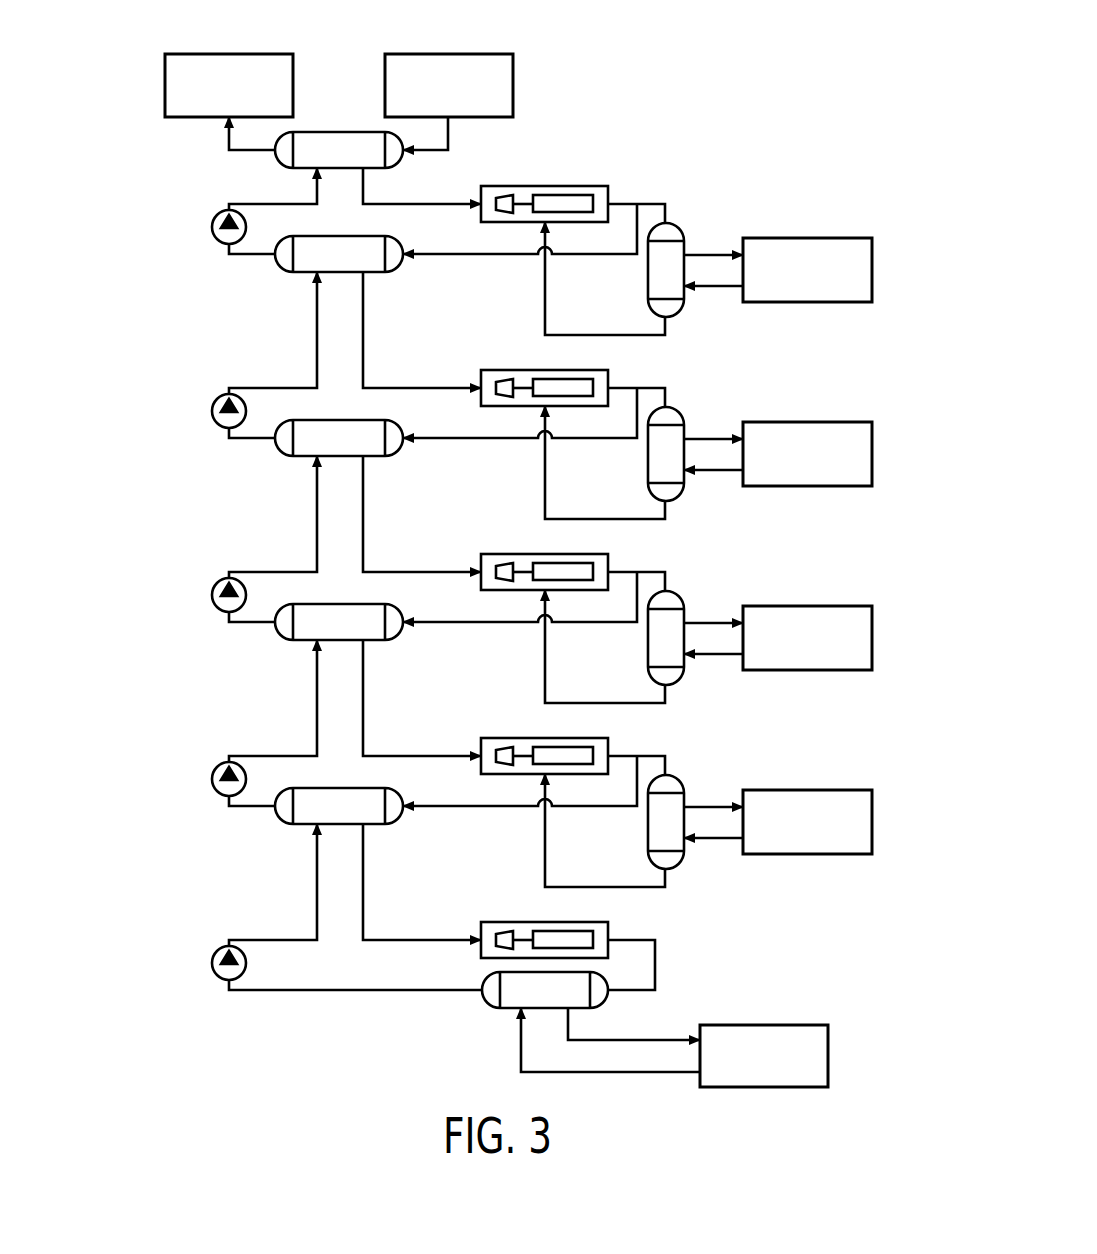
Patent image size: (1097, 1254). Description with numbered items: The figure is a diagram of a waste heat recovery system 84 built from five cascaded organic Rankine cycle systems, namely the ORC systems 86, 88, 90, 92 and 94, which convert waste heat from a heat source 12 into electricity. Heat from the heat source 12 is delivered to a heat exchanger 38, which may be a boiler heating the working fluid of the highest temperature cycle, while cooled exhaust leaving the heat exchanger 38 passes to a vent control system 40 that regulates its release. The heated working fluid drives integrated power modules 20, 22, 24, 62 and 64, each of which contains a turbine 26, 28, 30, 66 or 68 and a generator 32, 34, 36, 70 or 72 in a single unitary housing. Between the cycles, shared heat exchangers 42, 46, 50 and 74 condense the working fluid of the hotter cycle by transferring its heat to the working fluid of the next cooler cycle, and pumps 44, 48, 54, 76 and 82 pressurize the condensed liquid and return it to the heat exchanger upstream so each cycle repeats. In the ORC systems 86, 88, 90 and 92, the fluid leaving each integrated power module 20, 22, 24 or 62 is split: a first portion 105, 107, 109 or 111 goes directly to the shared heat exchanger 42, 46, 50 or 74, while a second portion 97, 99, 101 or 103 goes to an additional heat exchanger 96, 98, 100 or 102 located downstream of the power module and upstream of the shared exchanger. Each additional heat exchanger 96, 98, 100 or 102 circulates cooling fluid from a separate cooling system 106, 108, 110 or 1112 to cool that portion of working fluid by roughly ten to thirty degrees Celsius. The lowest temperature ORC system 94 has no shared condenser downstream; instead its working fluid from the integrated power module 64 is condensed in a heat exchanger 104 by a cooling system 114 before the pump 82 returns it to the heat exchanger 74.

The waste heat recovery system 84 is at (626, 46).
The heat source 12 is at (513, 86).
The vent control system 40 is at (165, 88).
The heat exchanger 38 is at (338, 132).
The heat exchanger 42 is at (338, 236).
The heat exchanger 46 is at (338, 420).
The heat exchanger 50 is at (338, 604).
The heat exchanger 74 is at (338, 788).
The pump 44 is at (217, 215).
The pump 48 is at (217, 399).
The pump 54 is at (217, 583).
The pump 76 is at (217, 767).
The pump 82 is at (217, 951).
The integrated power module 20 is at (569, 182).
The integrated power module 22 is at (569, 366).
The integrated power module 24 is at (569, 550).
The integrated power module 62 is at (569, 734).
The integrated power module 64 is at (569, 918).
The turbine 26 is at (505, 196).
The turbine 28 is at (505, 380).
The turbine 30 is at (505, 564).
The turbine 66 is at (505, 748).
The turbine 68 is at (505, 932).
The generator 32 is at (563, 195).
The generator 34 is at (563, 379).
The generator 36 is at (563, 563).
The generator 70 is at (563, 747).
The generator 72 is at (563, 931).
The ORC system 86 is at (637, 235).
The ORC system 88 is at (637, 418).
The ORC system 90 is at (637, 604).
The ORC system 92 is at (637, 790).
The ORC system 94 is at (668, 966).
The additional heat exchanger 96 is at (682, 227).
The additional heat exchanger 98 is at (682, 411).
The additional heat exchanger 100 is at (682, 595).
The additional heat exchanger 102 is at (682, 779).
The heat exchanger 104 is at (542, 1008).
The second portion 97 is at (676, 207).
The second portion 99 is at (676, 391).
The second portion 101 is at (676, 575).
The second portion 103 is at (676, 759).
The first portion 105 is at (614, 264).
The first portion 107 is at (614, 448).
The first portion 109 is at (614, 632).
The first portion 111 is at (614, 816).
The cooling system 106 is at (812, 238).
The cooling system 108 is at (812, 422).
The cooling system 110 is at (812, 606).
The cooling system 1112 is at (812, 790).
The cooling system 114 is at (828, 1057).